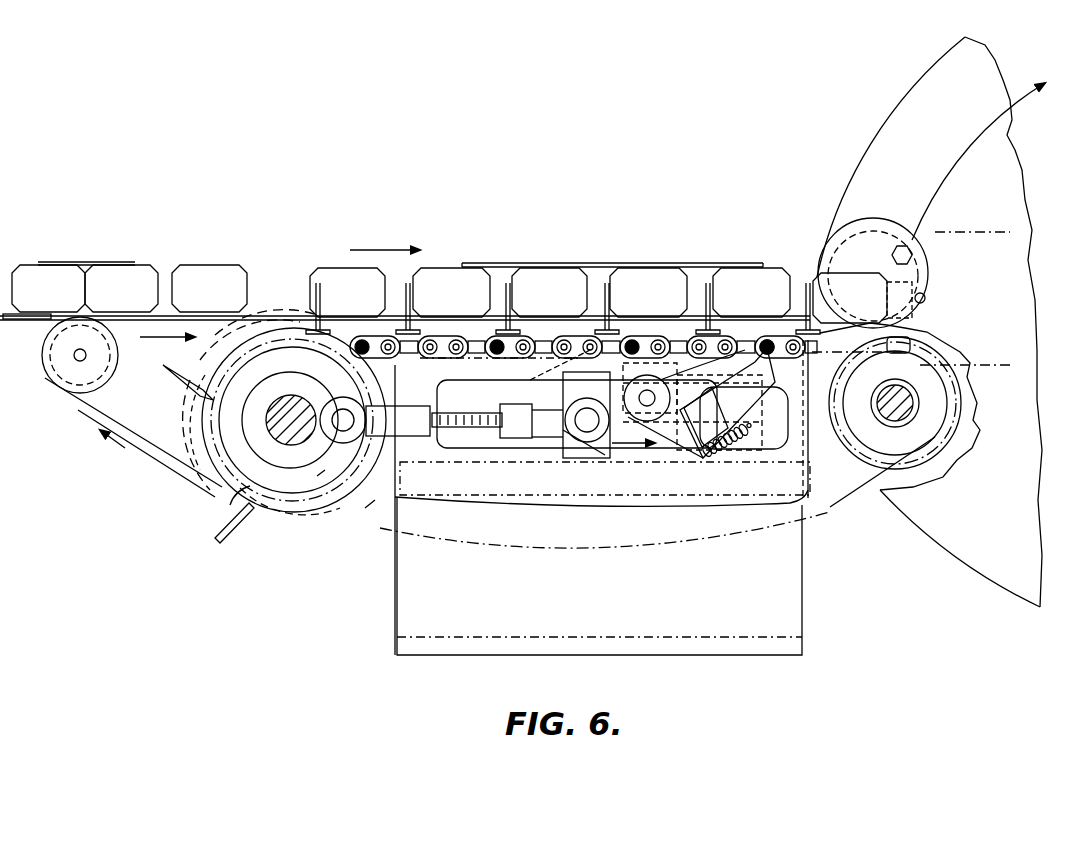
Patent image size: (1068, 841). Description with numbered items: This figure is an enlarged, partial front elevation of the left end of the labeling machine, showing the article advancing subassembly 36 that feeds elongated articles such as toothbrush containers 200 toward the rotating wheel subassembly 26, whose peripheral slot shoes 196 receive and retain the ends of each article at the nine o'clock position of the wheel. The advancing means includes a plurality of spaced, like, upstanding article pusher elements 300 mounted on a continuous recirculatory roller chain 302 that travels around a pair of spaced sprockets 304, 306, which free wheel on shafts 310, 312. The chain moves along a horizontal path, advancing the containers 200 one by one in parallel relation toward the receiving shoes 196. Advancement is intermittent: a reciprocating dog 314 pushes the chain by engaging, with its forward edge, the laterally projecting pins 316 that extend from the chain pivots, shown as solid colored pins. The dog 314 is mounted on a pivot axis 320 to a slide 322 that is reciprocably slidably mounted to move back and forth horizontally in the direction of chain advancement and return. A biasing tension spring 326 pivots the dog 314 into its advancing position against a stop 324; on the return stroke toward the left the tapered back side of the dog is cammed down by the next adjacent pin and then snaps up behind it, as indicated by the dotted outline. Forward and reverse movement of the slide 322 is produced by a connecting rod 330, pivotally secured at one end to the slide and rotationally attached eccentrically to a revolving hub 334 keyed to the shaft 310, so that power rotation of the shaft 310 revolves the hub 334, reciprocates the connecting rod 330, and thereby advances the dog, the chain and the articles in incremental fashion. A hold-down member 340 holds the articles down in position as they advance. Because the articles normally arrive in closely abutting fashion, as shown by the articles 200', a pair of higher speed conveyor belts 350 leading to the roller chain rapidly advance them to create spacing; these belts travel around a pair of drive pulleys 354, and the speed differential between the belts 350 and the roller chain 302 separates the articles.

The label applicator subassembly 26 is at (882, 143).
The article advancing subassembly 36 is at (460, 540).
The slot shoes 196 is at (843, 232).
The containers 200 is at (611, 295).
The articles 200' is at (85, 288).
The article pusher elements 300 is at (232, 518).
The roller chain 302 is at (444, 355).
The sprocket 304 is at (308, 505).
The sprocket 306 is at (933, 428).
The shaft 310 is at (300, 405).
The shaft 312 is at (936, 386).
The reciprocating dog 314 is at (777, 372).
The pins 316 is at (770, 343).
The pivot axis 320 is at (644, 396).
The slide 322 is at (628, 427).
The stop 324 is at (728, 408).
The biasing tension spring 326 is at (745, 450).
The connecting rod 330 is at (535, 430).
The revolving hub 334 is at (345, 498).
The hold-down member 340 is at (486, 265).
The conveyor belts 350 is at (215, 318).
The drive pulleys 354 is at (72, 388).